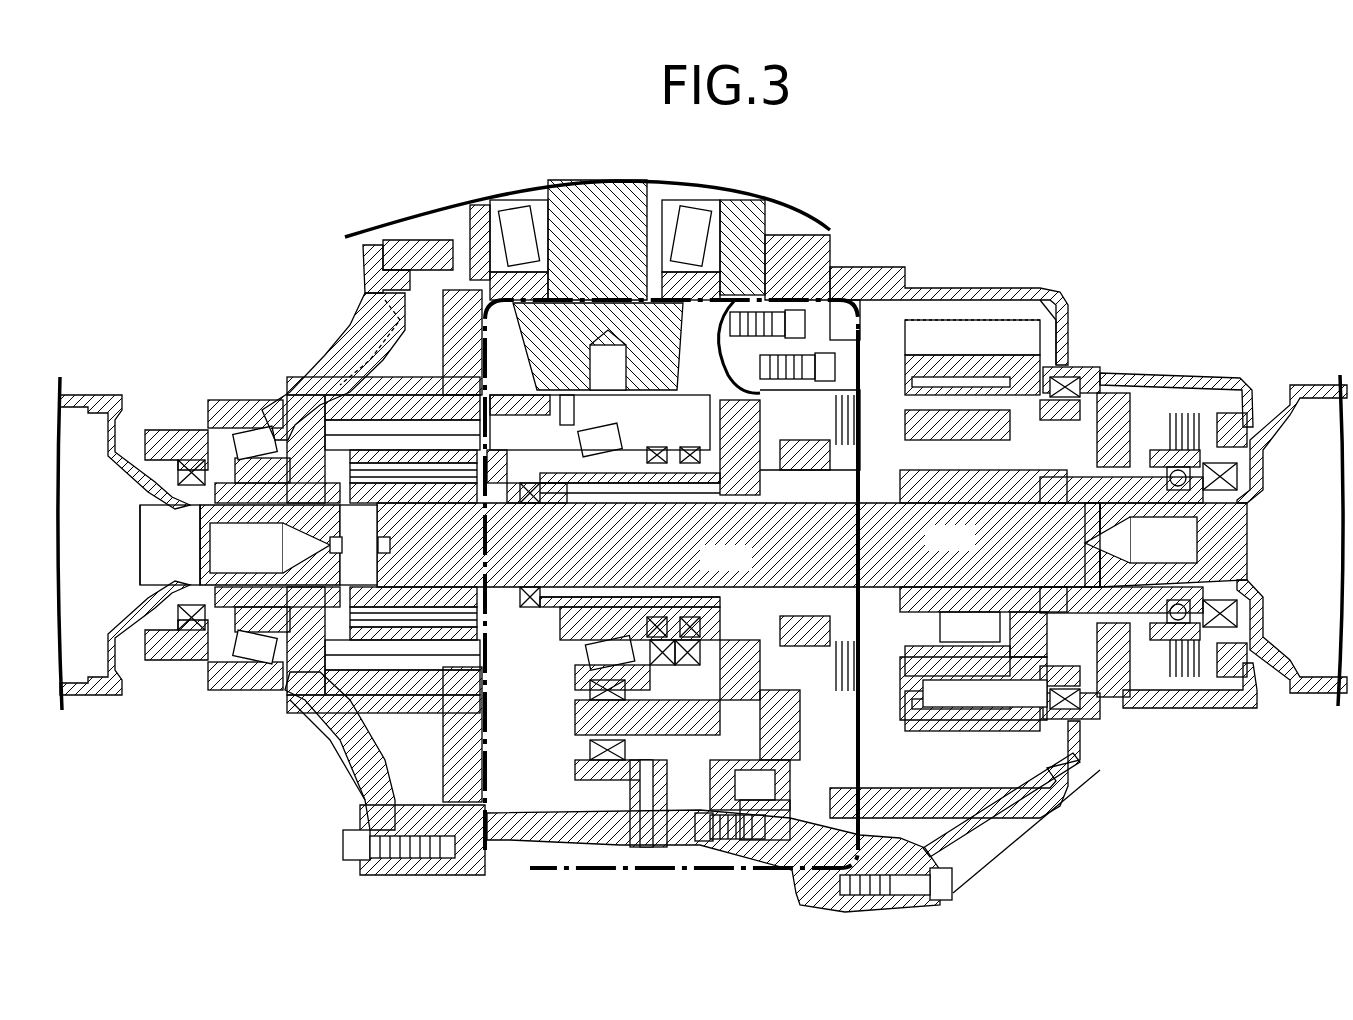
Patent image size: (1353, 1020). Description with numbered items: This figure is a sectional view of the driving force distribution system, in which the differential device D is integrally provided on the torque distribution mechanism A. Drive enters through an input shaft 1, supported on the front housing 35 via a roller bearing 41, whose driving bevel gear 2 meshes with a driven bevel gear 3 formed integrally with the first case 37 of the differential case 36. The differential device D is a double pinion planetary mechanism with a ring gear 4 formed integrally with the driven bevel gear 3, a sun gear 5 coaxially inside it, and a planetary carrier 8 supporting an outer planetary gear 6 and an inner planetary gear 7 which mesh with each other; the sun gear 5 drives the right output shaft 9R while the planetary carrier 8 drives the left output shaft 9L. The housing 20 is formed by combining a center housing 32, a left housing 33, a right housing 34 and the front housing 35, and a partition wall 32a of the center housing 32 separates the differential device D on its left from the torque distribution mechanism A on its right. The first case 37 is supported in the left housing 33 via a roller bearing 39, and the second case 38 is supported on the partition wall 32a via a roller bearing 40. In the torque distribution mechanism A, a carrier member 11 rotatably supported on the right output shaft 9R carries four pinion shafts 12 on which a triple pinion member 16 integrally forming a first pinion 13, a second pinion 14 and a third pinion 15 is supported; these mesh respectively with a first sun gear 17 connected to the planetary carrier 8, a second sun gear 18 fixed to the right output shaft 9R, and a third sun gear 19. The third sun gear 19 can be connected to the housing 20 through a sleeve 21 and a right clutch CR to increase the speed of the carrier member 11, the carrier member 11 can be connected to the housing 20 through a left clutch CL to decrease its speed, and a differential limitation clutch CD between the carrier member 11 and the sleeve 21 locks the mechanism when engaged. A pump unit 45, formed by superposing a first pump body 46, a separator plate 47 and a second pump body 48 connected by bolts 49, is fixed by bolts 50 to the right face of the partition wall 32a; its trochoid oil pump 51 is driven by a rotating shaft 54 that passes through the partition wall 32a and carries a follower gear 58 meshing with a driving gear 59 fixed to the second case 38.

The input shaft 1 is at (598, 185).
The driving bevel gear 2 is at (745, 303).
The driven bevel gear 3 is at (488, 293).
The ring gear 4 is at (515, 884).
The sun gear 5 is at (407, 503).
The outer planetary gear 6 is at (360, 400).
The inner planetary gear 7 is at (373, 680).
The planetary carrier 8 is at (330, 545).
The left output shaft 9L is at (253, 523).
The right output shaft 9R is at (965, 551).
The carrier member 11 is at (1062, 360).
The pinion shafts 12 is at (1086, 402).
The first pinion 13 is at (948, 350).
The second pinion 14 is at (988, 340).
The third pinion 15 is at (1042, 316).
The triple pinion member 16 is at (933, 315).
The first sun gear 17 is at (942, 643).
The second sun gear 18 is at (990, 640).
The third sun gear 19 is at (1027, 623).
The housing 20 is at (866, 252).
The sleeve 21 is at (1038, 487).
The center housing 32 is at (835, 262).
The partition wall 32a is at (662, 607).
The left housing 33 is at (273, 400).
The right housing 34 is at (1187, 381).
The front housing 35 is at (730, 228).
The differential case 36 is at (333, 697).
The first case 37 is at (310, 687).
The second case 38 is at (567, 470).
The roller bearing 39 is at (237, 413).
The roller bearing 40 is at (613, 487).
The roller bearing 41 is at (512, 222).
The pump unit 45 is at (655, 843).
The first pump body 46 is at (748, 847).
The separator plate 47 is at (785, 800).
The second pump body 48 is at (783, 773).
The bolts 49 is at (812, 362).
The bolts 50 is at (727, 447).
The trochoid oil pump 51 is at (763, 737).
The rotating shaft 54 is at (610, 740).
The follower gear 58 is at (568, 753).
The driving gear 59 is at (567, 422).
The torque distribution mechanism A is at (947, 305).
The differential device D is at (395, 360).
The left clutch CL is at (880, 362).
The right clutch CR is at (1227, 392).
The differential limitation clutch CD is at (1102, 372).